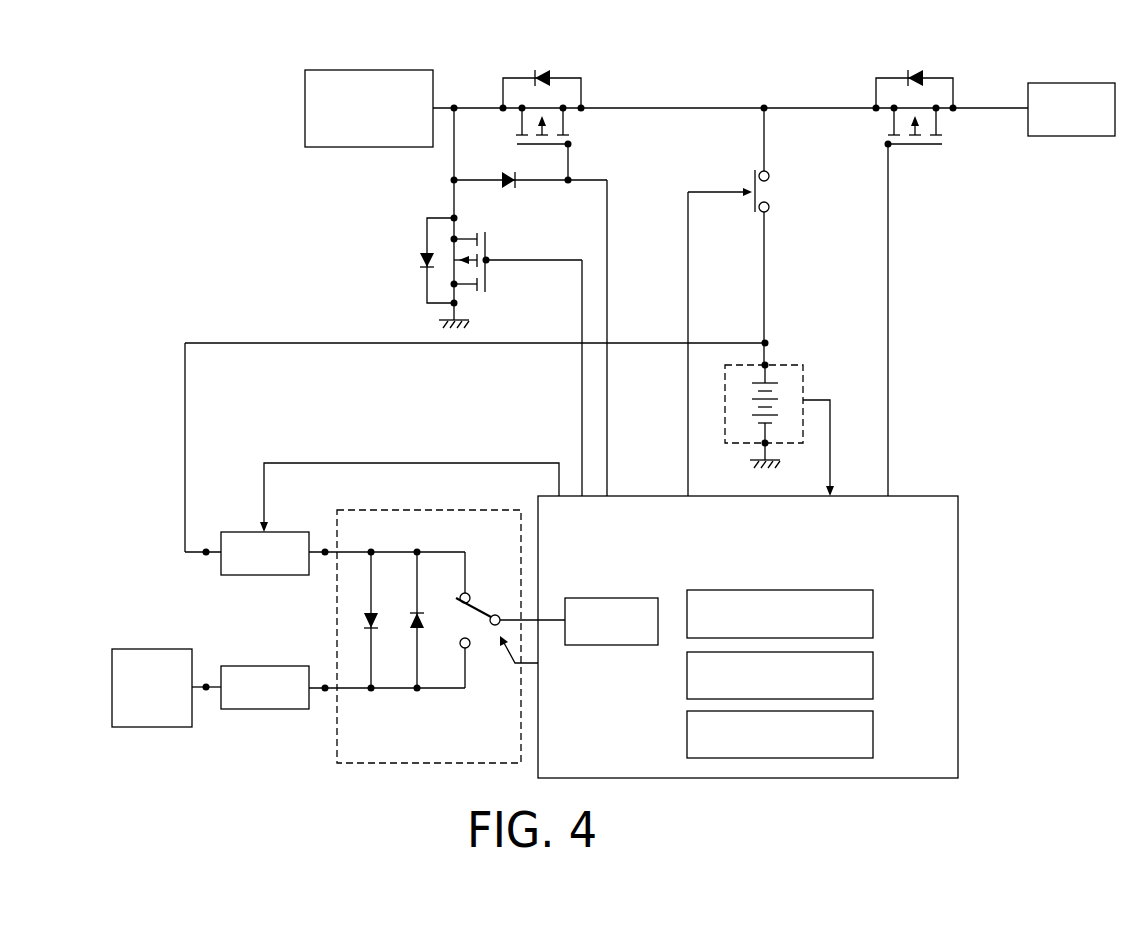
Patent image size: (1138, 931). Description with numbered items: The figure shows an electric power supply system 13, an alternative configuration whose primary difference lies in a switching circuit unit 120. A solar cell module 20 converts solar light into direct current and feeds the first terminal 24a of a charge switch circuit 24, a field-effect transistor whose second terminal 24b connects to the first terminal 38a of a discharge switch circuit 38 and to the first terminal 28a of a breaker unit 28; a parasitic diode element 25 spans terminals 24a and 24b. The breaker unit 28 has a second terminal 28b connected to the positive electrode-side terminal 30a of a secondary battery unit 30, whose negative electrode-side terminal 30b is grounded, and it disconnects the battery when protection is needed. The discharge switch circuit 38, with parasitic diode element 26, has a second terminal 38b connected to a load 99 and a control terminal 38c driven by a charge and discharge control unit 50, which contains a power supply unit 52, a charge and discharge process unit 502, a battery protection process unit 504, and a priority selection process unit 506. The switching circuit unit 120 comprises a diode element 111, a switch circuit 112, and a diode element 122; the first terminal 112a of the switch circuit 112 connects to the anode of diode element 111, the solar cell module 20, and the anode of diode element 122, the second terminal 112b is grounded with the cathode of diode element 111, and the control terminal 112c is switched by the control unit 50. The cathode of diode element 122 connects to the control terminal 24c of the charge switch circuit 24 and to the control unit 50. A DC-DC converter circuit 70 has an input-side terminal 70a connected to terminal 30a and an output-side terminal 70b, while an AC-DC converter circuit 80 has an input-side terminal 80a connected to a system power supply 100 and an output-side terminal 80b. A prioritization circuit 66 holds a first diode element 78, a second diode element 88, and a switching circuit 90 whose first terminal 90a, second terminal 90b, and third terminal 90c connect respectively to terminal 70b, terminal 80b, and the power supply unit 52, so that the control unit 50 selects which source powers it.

The electric power supply system 13 is at (222, 133).
The solar cell module 20 is at (372, 70).
The charge switch circuit 24 is at (559, 117).
The first terminal 24a is at (520, 112).
The second terminal 24b is at (565, 104).
The control terminal 24c is at (572, 147).
The diode element 25 is at (540, 70).
The diode element 26 is at (918, 68).
The breaker unit 28 is at (758, 236).
The first terminal 28a is at (768, 172).
The second terminal 28b is at (769, 210).
The secondary battery unit 30 is at (781, 406).
The positive electrode-side terminal 30a is at (768, 363).
The negative electrode-side terminal 30b is at (762, 447).
The discharge switch circuit 38 is at (921, 131).
The first terminal 38a is at (892, 112).
The second terminal 38b is at (940, 105).
The control terminal 38c is at (893, 148).
The charge and discharge control unit 50 is at (781, 637).
The power supply unit 52 is at (613, 647).
The prioritization circuit 66 is at (451, 657).
The DC-DC converter circuit 70 is at (322, 587).
The input-side terminal 70a is at (206, 560).
The output-side terminal 70b is at (323, 560).
The first diode element 78 is at (375, 612).
The AC-DC converter circuit 80 is at (322, 723).
The input-side terminal 80a is at (206, 695).
The output-side terminal 80b is at (323, 695).
The second diode element 88 is at (418, 632).
The switching circuit 90 is at (491, 622).
The first terminal 90a is at (463, 592).
The second terminal 90b is at (463, 648).
The third terminal 90c is at (495, 613).
The load 99 is at (1073, 82).
The system power supply 100 is at (150, 730).
The diode element 111 is at (416, 262).
The switch circuit 112 is at (514, 264).
The first terminal 112a is at (457, 238).
The second terminal 112b is at (460, 287).
The control terminal 112c is at (490, 263).
The switching circuit unit 120 is at (442, 263).
The diode element 122 is at (516, 183).
The charge and discharge process unit 502 is at (875, 615).
The battery protection process unit 504 is at (875, 675).
The priority selection process unit 506 is at (875, 736).